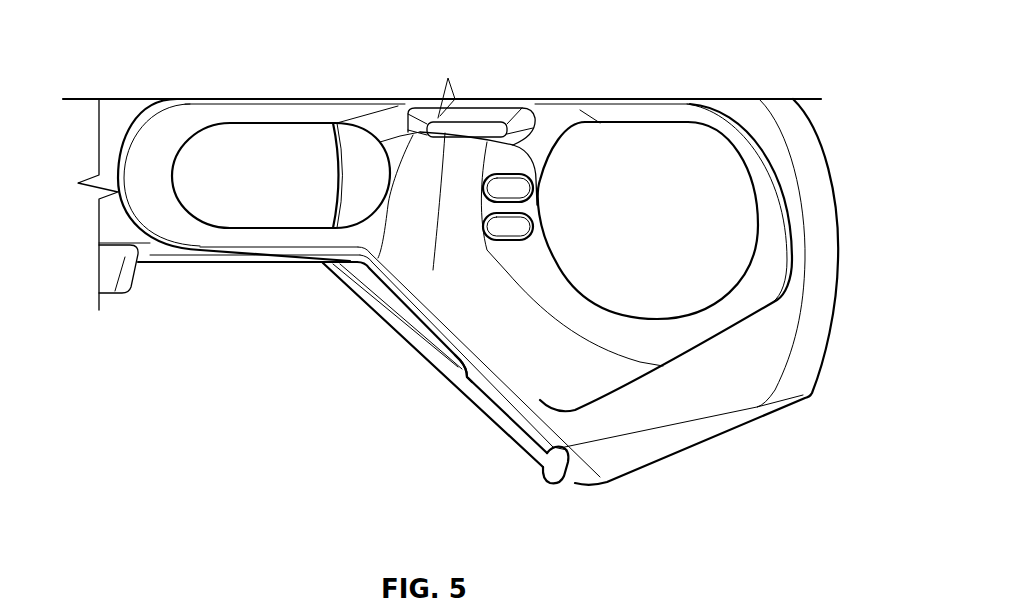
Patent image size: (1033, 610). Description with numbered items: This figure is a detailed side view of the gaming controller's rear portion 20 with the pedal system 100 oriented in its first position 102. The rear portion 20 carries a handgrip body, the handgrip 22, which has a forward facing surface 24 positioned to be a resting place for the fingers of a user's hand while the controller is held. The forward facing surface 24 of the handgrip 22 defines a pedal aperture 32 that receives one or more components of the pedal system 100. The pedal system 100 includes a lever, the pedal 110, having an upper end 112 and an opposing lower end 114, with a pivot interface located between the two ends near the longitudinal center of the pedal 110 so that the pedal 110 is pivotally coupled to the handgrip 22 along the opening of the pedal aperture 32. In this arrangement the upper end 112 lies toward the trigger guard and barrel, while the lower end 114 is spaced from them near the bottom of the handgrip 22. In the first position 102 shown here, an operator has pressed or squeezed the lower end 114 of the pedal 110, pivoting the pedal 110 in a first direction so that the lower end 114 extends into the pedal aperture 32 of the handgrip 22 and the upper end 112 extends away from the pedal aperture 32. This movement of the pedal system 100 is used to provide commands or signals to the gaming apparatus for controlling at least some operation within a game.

The rear portion 20 is at (103, 48).
The handgrip 22 is at (647, 431).
The forward facing surface 24 is at (548, 485).
The pedal aperture 32 is at (567, 447).
The pedal system 100 is at (422, 413).
The first position 102 is at (337, 317).
The pedal 110 is at (455, 363).
The upper end 112 is at (281, 275).
The lower end 114 is at (533, 482).